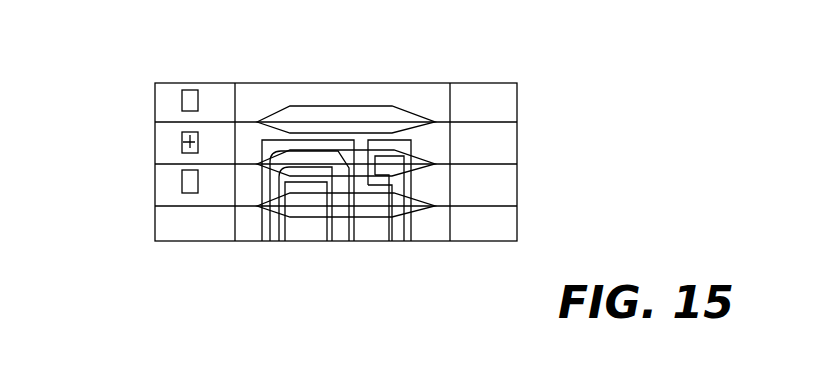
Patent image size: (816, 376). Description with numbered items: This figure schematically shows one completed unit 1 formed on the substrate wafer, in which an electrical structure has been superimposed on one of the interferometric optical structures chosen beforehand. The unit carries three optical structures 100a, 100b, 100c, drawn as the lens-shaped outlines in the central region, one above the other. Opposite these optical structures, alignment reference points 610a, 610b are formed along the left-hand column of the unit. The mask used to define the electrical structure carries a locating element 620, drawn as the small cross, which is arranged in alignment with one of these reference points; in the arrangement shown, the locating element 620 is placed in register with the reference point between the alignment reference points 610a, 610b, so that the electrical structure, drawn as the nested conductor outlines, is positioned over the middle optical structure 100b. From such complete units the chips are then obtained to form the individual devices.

The display device substrate 1 is at (169, 222).
The alignment reference point 610a is at (185, 95).
The locating element 620 is at (185, 137).
The alignment reference point 610b is at (183, 152).
The optical structure 100a is at (431, 114).
The optical structure 100b is at (434, 165).
The optical structure 100c is at (424, 218).